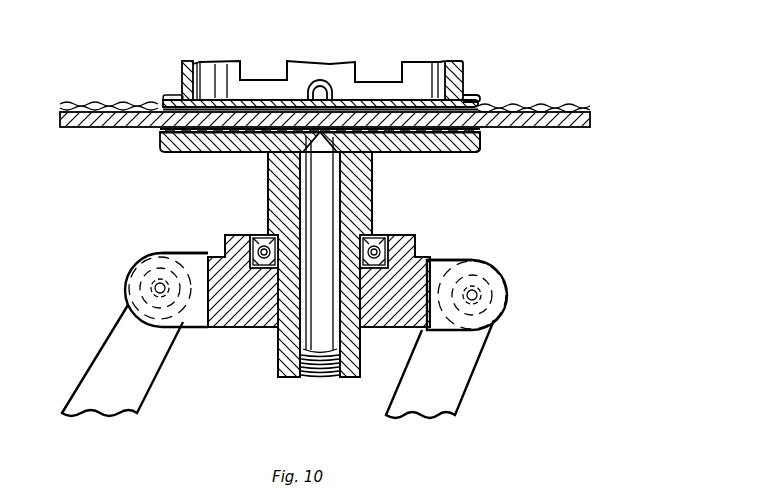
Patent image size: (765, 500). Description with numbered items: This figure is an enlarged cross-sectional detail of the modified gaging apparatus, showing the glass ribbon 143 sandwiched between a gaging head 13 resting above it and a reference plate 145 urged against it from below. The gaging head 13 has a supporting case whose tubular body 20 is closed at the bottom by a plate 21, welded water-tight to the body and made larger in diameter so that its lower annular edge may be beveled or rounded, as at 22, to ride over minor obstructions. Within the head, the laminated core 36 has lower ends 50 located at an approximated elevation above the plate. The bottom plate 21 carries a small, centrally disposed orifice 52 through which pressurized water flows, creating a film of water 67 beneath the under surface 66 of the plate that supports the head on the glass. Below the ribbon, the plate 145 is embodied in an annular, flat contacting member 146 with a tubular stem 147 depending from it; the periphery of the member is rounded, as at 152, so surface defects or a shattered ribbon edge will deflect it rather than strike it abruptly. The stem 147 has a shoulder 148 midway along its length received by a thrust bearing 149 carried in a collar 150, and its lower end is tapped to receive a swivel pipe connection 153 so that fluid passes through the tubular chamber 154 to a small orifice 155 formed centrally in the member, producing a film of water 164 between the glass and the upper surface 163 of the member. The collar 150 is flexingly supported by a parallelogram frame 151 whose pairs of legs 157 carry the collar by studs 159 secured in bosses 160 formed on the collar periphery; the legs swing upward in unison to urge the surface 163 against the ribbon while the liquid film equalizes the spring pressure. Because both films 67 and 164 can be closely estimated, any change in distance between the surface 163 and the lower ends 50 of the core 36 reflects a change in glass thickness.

The gaging head 13 is at (462, 62).
The tubular body 20 is at (183, 65).
The plate 21 is at (222, 99).
The beveled or rounded edge 22 is at (160, 98).
The laminated core 36 is at (257, 62).
The lower ends of the laminated core 50 is at (272, 73).
The orifice 52 is at (333, 98).
The under surface of the plate 66 is at (465, 96).
The film of water 67 is at (474, 106).
The glass ribbon 143 is at (83, 128).
The plate 145 is at (192, 151).
The contacting member 146 is at (417, 146).
The tubular stem 147 is at (350, 190).
The shoulder 148 is at (368, 234).
The thrust bearing 149 is at (258, 240).
The collar 150 is at (232, 272).
The parallelogram frame 151 is at (98, 343).
The rounded periphery 152 is at (170, 134).
The swivel pipe connection 153 is at (316, 368).
The tubular chamber 154 is at (307, 175).
The orifice 155 is at (315, 137).
The legs 157 is at (108, 362).
The studs 159 is at (150, 288).
The bosses 160 is at (148, 270).
The upper surface of the member 163 is at (466, 153).
The film of water 164 is at (478, 134).